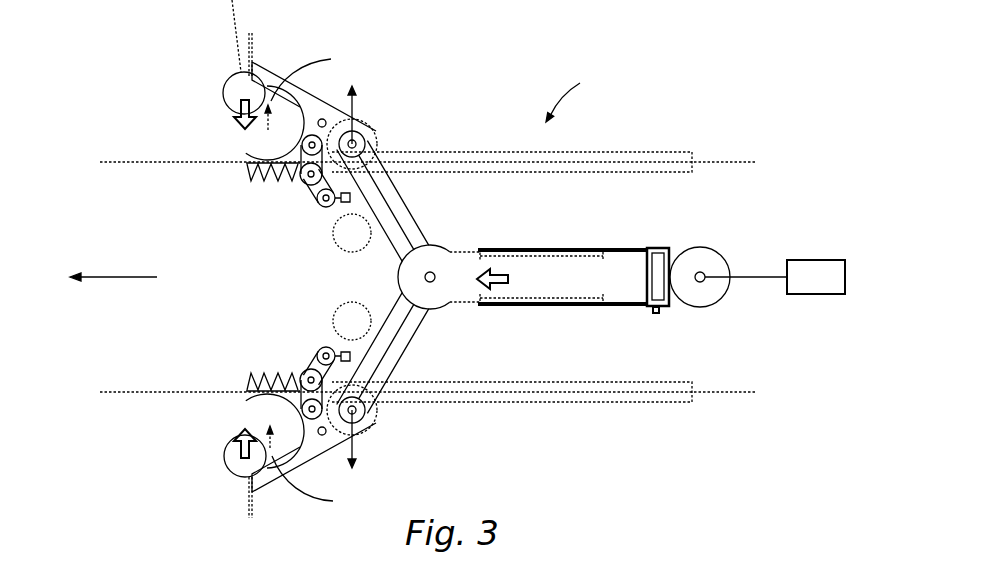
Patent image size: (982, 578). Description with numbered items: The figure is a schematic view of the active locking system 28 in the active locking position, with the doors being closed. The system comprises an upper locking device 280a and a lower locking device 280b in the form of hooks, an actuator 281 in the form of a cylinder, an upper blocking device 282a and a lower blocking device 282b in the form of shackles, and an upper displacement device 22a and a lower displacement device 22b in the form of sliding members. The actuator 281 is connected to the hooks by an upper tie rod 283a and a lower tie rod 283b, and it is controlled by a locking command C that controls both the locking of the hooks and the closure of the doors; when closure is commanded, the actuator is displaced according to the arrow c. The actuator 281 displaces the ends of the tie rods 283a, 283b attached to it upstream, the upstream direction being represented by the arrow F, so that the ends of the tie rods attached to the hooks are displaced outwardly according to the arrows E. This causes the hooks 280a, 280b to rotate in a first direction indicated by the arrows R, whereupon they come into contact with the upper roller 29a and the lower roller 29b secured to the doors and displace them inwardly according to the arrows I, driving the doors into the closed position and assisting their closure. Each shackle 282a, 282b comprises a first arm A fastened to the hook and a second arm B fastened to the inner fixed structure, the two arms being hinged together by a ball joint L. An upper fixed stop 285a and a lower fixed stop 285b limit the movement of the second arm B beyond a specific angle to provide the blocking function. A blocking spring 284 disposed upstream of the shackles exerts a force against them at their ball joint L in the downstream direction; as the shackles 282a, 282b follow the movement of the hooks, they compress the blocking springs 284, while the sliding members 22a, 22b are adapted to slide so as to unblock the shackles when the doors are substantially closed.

The upper displacement device 22a is at (648, 160).
The lower displacement device 22b is at (648, 400).
The active locking system 28 is at (580, 97).
The actuator 281 is at (634, 258).
The upper tie rod 283a is at (401, 214).
The lower tie rod 283b is at (401, 338).
The upper locking device 280a is at (265, 78).
The lower locking device 280b is at (265, 476).
The upper roller 29a is at (228, 86).
The lower roller 29b is at (229, 468).
The blocking spring 284 is at (258, 369).
The upper blocking device 282a is at (320, 210).
The lower blocking device 282b is at (320, 345).
The upper fixed stop 285a is at (358, 252).
The lower fixed stop 285b is at (358, 302).
The first arm A is at (298, 424).
The second arm B is at (346, 352).
The locking command C is at (818, 260).
The actuator displacement arrow c is at (503, 262).
The outward displacement arrows E is at (354, 455).
The upstream direction arrow F is at (122, 277).
The inward displacement arrows I is at (238, 443).
The ball joint L is at (305, 362).
The hook rotation arrows R is at (311, 280).